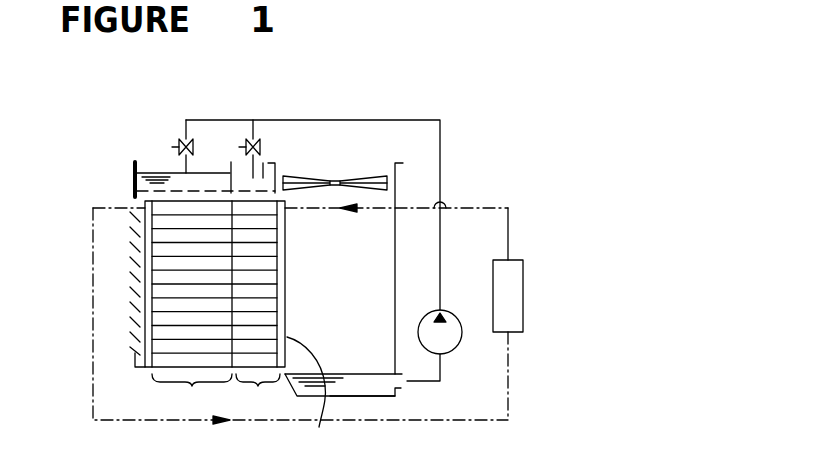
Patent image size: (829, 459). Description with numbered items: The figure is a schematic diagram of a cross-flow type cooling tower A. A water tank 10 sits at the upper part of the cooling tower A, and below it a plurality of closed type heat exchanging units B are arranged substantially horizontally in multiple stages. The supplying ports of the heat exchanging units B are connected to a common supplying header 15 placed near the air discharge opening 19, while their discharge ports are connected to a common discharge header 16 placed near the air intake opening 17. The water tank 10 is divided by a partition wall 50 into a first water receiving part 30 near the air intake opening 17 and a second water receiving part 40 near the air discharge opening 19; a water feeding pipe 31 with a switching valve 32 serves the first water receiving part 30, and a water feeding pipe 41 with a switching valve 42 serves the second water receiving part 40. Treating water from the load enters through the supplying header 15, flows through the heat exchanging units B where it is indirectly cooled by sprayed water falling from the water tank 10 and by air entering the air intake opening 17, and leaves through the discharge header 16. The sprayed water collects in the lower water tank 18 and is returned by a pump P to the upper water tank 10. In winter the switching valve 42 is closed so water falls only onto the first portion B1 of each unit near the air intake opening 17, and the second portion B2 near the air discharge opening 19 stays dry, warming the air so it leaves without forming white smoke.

The water tank 10 is at (132, 173).
The first water receiving part 30 is at (153, 167).
The water feeding pipe 31 is at (182, 115).
The switching valve 32 is at (172, 144).
The partition wall 50 is at (227, 164).
The water feeding pipe 41 is at (250, 136).
The switching valve 42 is at (263, 162).
The second water receiving part 40 is at (268, 158).
The air discharge opening 19 is at (340, 174).
The discharge header 16 is at (147, 270).
The air intake opening 17 is at (132, 311).
The closed type heat exchanging units B is at (167, 322).
The first portion B1 is at (192, 395).
The second portion B2 is at (258, 395).
The supplying header 15 is at (308, 398).
The water tank 18 is at (367, 384).
The pump P is at (462, 333).
The cross-flow type cooling tower A is at (444, 138).